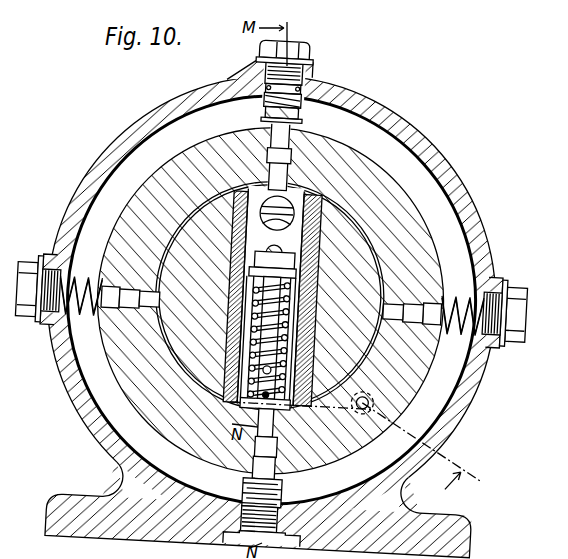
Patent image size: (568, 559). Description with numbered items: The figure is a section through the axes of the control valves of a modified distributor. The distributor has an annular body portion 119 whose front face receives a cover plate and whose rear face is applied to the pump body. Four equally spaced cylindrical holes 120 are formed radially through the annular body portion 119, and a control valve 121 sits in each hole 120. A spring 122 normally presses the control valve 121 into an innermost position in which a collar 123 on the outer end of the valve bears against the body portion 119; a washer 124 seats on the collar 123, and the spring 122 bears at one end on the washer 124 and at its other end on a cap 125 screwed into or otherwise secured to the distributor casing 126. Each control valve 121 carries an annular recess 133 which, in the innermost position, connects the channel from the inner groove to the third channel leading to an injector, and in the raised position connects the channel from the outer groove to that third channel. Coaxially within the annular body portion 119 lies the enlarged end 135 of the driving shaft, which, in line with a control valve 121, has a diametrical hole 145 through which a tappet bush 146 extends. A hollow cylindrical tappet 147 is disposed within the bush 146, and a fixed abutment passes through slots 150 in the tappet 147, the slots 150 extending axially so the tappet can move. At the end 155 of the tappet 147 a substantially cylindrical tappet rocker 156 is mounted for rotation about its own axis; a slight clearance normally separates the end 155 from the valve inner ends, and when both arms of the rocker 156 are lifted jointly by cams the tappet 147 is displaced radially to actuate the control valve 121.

The annular body portion 119 is at (300, 212).
The cylindrical holes 120 is at (293, 98).
The control valve 121 is at (266, 122).
The spring 122 is at (320, 74).
The collar 123 is at (262, 100).
The washer 124 is at (258, 77).
The cap 125 is at (312, 46).
The distributor casing 126 is at (90, 202).
The annular recess 133 is at (300, 127).
The enlarged end 135 is at (478, 259).
The diametrical hole 145 is at (320, 250).
The tappet bush 146 is at (307, 338).
The tappet 147 is at (207, 187).
The slots 150 is at (297, 187).
The end of the tappet 155 is at (268, 150).
The tappet rocker 156 is at (258, 195).